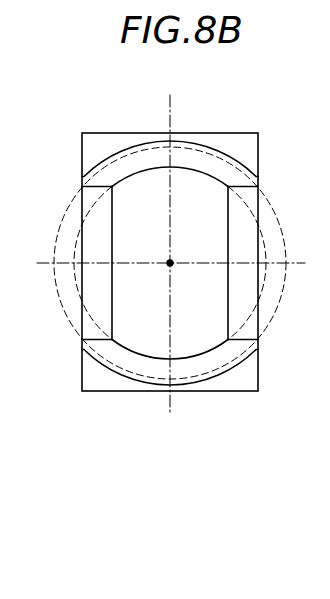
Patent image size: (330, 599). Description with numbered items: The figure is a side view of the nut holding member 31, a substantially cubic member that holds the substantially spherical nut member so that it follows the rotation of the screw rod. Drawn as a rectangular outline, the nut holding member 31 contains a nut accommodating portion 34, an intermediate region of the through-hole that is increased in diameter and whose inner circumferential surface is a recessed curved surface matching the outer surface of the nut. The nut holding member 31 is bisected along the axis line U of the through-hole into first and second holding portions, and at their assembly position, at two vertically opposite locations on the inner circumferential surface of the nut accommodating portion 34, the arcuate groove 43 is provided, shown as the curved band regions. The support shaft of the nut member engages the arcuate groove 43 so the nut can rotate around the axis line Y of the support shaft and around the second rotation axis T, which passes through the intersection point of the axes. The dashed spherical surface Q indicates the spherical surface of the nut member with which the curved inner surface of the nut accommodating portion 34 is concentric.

The nut holding member 31 is at (298, 447).
The nut accommodating portion 34 is at (142, 343).
The arcuate groove 43 is at (208, 160).
The spherical surface Q is at (240, 199).
The axis line of the through-hole U is at (43, 262).
The second rotation axis T is at (172, 262).
The axis line of the support shaft Y is at (172, 120).